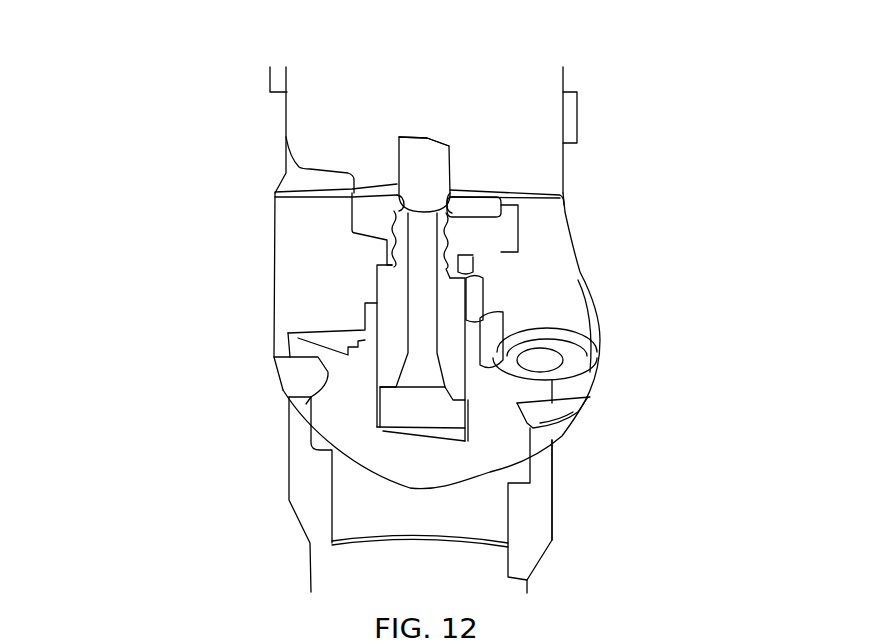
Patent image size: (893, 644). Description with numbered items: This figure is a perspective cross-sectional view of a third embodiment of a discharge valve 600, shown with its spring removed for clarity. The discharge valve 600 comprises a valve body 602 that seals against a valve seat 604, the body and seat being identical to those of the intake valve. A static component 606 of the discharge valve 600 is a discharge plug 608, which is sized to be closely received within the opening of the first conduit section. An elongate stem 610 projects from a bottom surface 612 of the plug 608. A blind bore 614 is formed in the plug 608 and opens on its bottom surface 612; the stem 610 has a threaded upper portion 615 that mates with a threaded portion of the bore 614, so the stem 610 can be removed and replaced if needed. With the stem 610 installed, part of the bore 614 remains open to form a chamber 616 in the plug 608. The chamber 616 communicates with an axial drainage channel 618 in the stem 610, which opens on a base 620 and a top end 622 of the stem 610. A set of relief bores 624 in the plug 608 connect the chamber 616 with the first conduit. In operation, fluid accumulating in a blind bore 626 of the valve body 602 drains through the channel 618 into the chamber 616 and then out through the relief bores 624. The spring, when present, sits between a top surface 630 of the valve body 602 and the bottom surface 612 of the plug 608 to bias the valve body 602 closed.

The discharge valve 600 is at (540, 420).
The valve body 602 is at (337, 408).
The valve seat 604 is at (315, 522).
The static component 606 is at (537, 148).
The discharge plug 608 is at (300, 103).
The elongate stem 610 is at (398, 330).
The bottom surface 612 is at (463, 256).
The blind bore 614 is at (398, 168).
The threaded upper portion 615 is at (403, 233).
The chamber 616 is at (429, 177).
The axial drainage channel 618 is at (425, 285).
The base 620 is at (462, 443).
The top end 622 is at (560, 197).
The relief bores 624 is at (300, 194).
The blind bore 626 is at (420, 418).
The top surface 630 is at (553, 357).